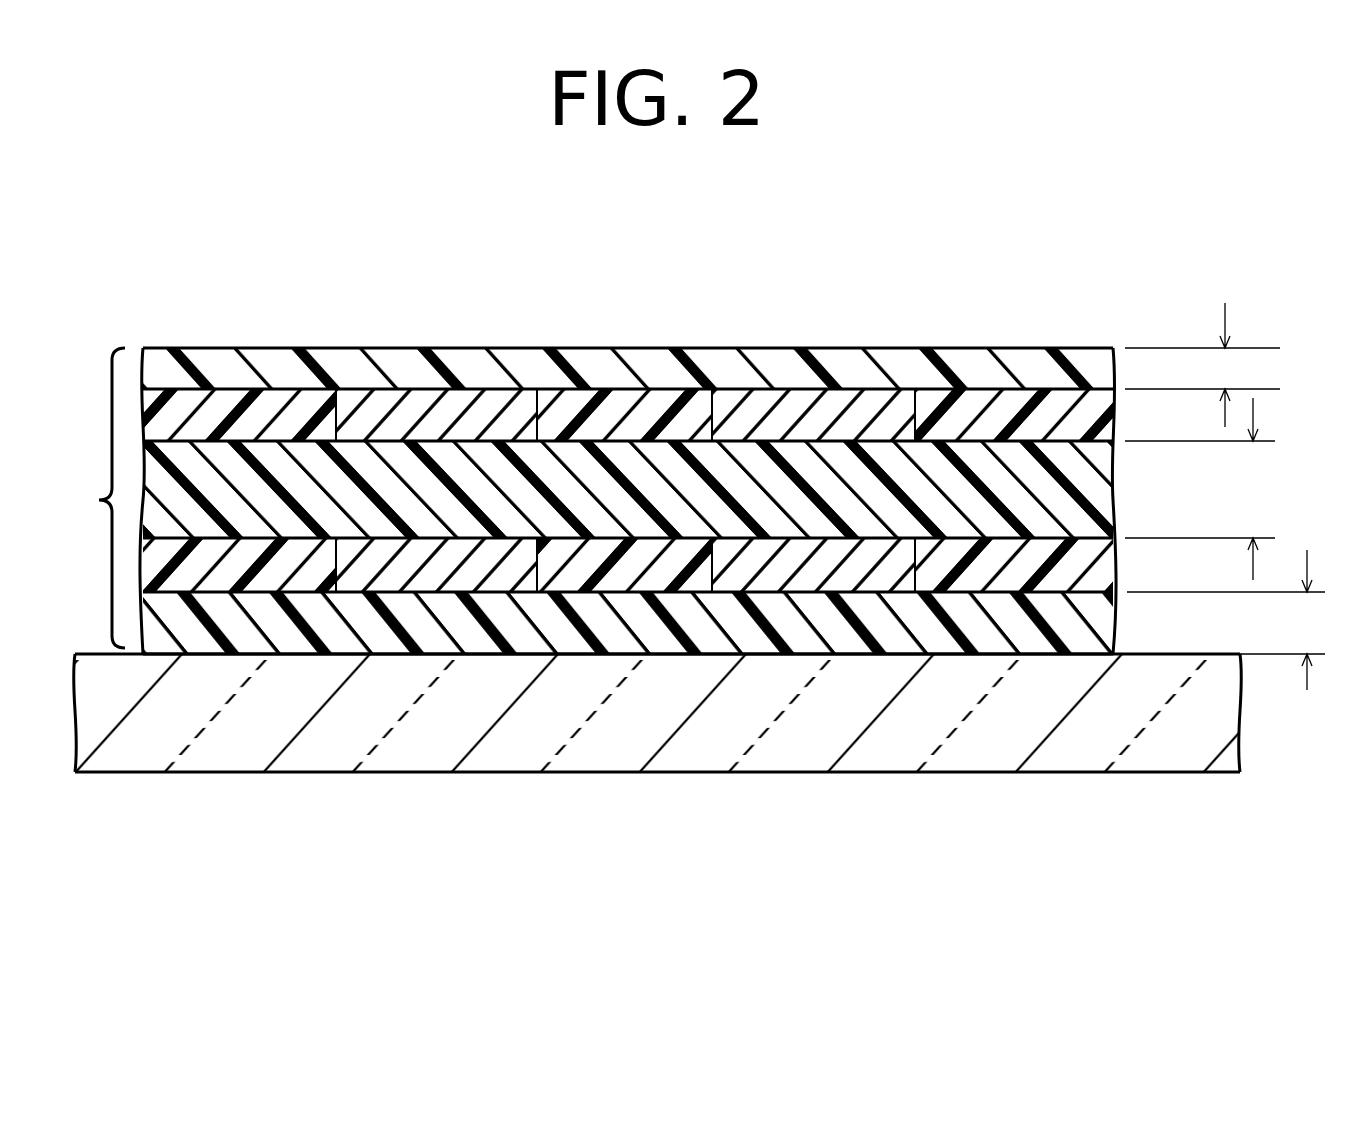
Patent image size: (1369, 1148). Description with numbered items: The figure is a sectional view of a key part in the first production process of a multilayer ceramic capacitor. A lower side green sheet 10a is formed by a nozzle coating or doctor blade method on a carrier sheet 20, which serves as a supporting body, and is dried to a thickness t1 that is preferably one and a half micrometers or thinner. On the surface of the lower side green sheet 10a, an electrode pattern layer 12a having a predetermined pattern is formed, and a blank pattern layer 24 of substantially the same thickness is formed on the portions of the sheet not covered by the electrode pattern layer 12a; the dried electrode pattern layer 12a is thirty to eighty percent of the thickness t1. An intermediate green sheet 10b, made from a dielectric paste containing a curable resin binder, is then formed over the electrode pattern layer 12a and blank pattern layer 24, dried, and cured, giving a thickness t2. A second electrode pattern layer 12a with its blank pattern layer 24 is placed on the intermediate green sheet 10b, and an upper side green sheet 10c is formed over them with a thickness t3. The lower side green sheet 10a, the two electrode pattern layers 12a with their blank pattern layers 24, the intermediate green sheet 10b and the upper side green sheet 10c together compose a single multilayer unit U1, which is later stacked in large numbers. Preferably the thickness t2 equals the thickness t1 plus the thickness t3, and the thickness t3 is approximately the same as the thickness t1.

The carrier sheet 20 is at (155, 718).
The blank pattern layer 24 is at (237, 403).
The electrode pattern layer 12a is at (436, 403).
The lower side green sheet 10a is at (1077, 627).
The intermediate green sheet 10b is at (940, 475).
The upper side green sheet 10c is at (1081, 370).
The multilayer unit U1 is at (86, 498).
The thickness of lower side green sheet t1 is at (1330, 620).
The thickness of intermediate green sheet t2 is at (1277, 489).
The thickness of upper side green sheet t3 is at (1248, 365).